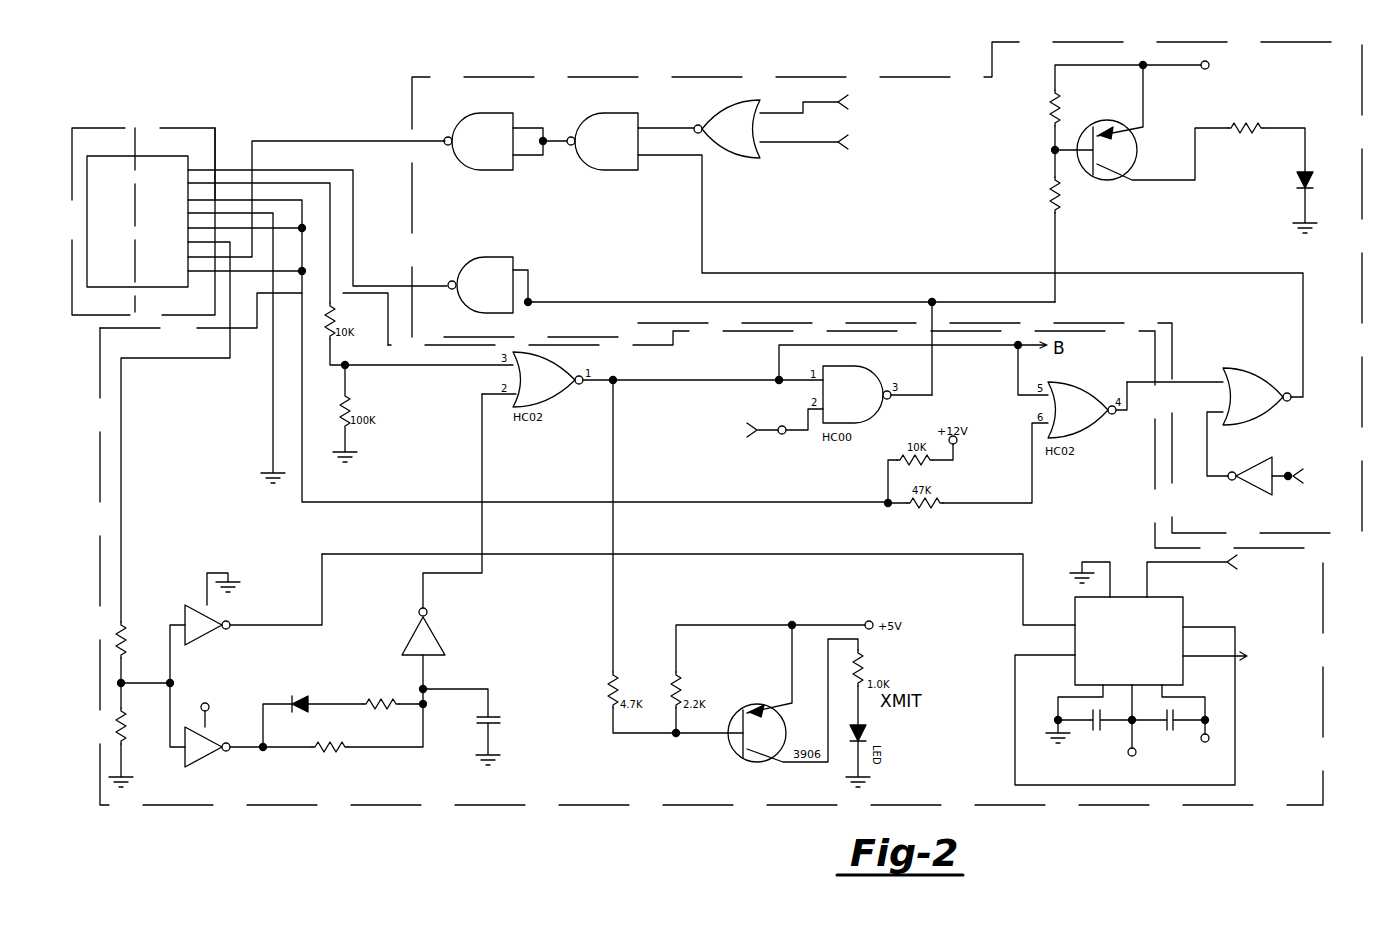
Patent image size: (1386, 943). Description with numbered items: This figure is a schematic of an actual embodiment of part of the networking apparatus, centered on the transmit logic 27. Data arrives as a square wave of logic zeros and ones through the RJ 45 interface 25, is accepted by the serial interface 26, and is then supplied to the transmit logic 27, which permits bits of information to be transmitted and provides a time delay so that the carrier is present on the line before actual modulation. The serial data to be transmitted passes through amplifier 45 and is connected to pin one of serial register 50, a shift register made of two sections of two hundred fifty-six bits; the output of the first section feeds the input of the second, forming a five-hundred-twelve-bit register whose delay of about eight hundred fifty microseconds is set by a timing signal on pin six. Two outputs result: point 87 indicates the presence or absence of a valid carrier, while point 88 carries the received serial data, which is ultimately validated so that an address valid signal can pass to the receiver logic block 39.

The RJ 45 interface 25 is at (103, 128).
The RS 232C interface 26 is at (217, 128).
The transmit logic 27 is at (1323, 690).
The receiver logic block 39 is at (1010, 42).
The amplifier 45 is at (195, 603).
The serial register 50 is at (1183, 603).
The point 87 is at (782, 434).
The point 88 is at (1288, 473).